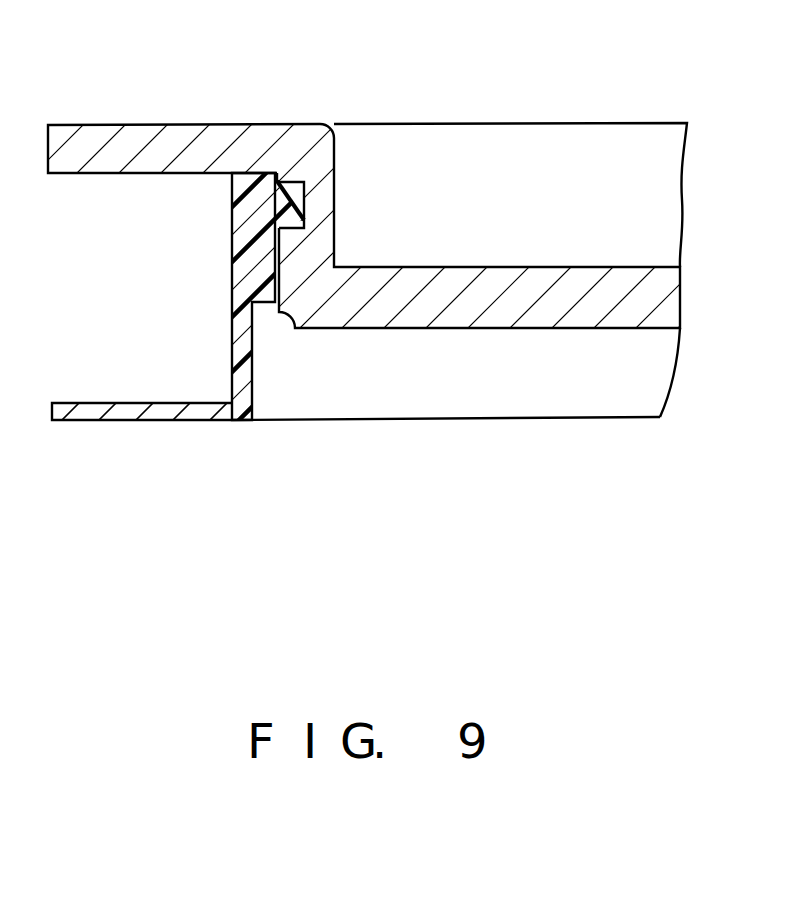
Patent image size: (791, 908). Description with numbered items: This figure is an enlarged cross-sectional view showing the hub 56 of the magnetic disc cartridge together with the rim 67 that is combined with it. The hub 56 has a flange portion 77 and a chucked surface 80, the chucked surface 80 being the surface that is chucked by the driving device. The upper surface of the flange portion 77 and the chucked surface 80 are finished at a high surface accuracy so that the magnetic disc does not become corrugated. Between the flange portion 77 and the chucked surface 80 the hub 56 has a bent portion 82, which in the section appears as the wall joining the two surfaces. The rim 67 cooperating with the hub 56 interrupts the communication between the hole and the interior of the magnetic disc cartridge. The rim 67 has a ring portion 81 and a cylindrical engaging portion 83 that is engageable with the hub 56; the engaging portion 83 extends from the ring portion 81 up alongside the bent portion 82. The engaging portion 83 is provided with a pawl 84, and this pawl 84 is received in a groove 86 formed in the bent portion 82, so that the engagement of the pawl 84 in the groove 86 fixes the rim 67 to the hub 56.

The hub 56 is at (537, 330).
The rim 67 is at (218, 428).
The flange portion 77 is at (144, 175).
The chucked surface 80 is at (460, 330).
The ring portion 81 is at (163, 423).
The bent portion 82 is at (334, 217).
The cylindrical engaging portion 83 is at (236, 326).
The pawl 84 is at (289, 217).
The groove 86 is at (303, 178).